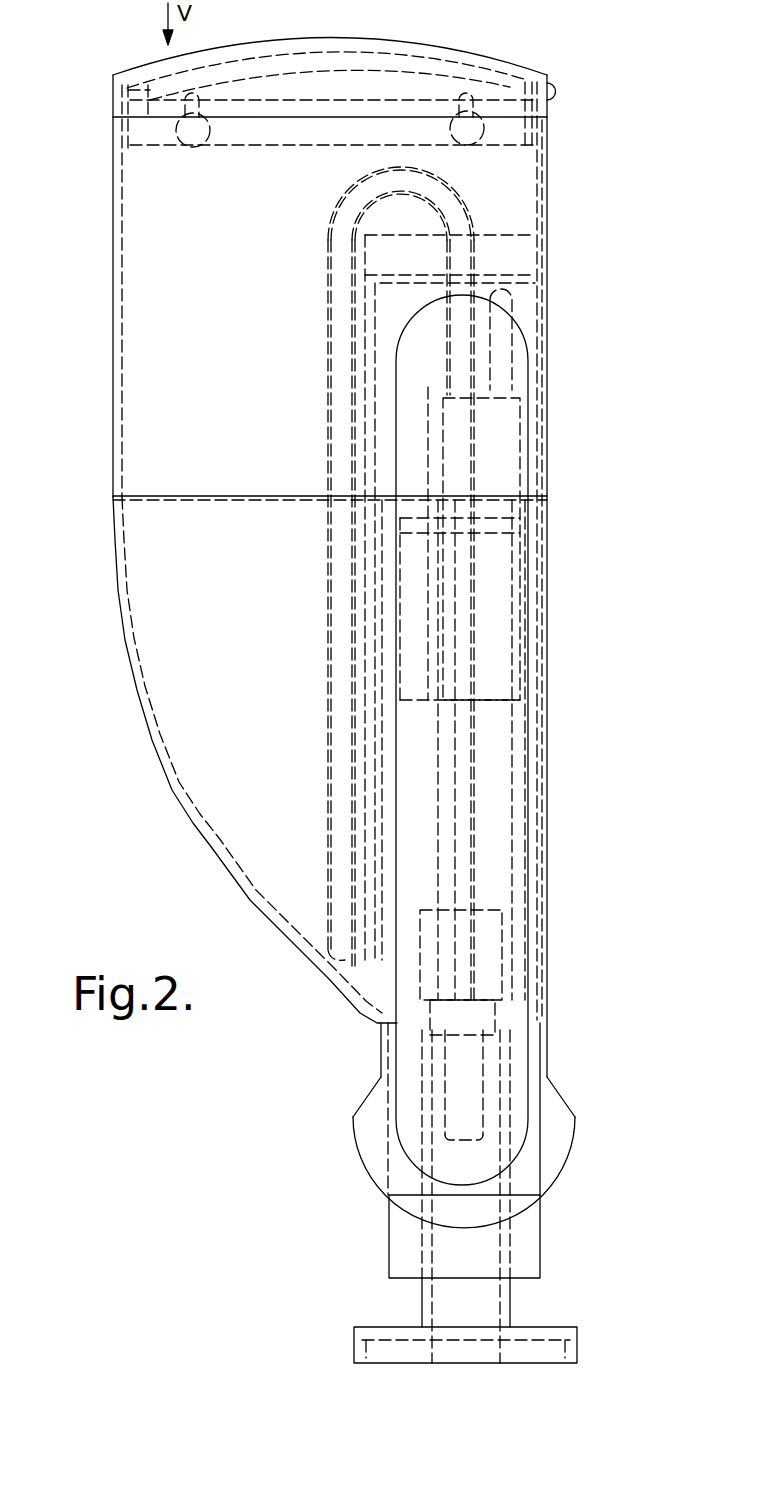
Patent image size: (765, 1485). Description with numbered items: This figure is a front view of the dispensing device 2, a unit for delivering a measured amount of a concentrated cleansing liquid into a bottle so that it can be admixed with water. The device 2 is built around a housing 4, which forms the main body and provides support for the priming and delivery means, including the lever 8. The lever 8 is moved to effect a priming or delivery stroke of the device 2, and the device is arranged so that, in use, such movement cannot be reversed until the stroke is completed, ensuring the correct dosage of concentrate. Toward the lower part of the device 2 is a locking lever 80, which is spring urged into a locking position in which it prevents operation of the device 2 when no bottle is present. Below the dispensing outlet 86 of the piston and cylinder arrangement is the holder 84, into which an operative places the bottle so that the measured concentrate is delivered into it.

The dispensing device 2 is at (73, 252).
The housing 4 is at (254, 337).
The lever 8 is at (522, 1090).
The locking lever 80 is at (536, 1250).
The holder 84 is at (367, 1327).
The dispensing outlet 86 is at (462, 1077).